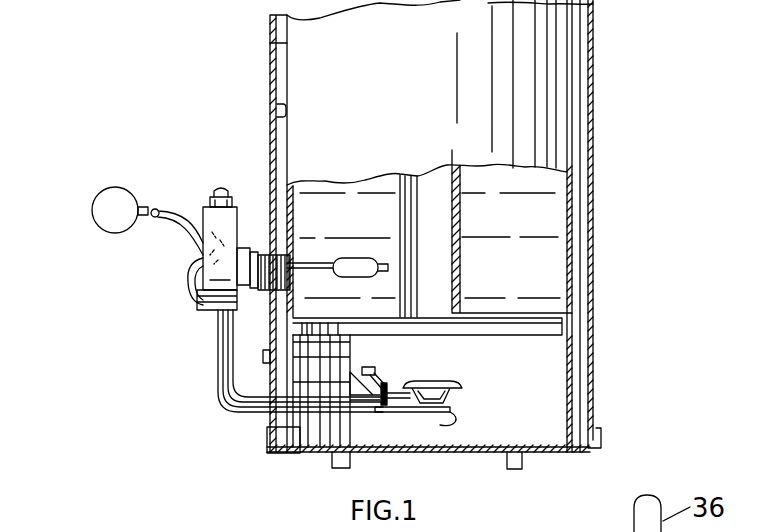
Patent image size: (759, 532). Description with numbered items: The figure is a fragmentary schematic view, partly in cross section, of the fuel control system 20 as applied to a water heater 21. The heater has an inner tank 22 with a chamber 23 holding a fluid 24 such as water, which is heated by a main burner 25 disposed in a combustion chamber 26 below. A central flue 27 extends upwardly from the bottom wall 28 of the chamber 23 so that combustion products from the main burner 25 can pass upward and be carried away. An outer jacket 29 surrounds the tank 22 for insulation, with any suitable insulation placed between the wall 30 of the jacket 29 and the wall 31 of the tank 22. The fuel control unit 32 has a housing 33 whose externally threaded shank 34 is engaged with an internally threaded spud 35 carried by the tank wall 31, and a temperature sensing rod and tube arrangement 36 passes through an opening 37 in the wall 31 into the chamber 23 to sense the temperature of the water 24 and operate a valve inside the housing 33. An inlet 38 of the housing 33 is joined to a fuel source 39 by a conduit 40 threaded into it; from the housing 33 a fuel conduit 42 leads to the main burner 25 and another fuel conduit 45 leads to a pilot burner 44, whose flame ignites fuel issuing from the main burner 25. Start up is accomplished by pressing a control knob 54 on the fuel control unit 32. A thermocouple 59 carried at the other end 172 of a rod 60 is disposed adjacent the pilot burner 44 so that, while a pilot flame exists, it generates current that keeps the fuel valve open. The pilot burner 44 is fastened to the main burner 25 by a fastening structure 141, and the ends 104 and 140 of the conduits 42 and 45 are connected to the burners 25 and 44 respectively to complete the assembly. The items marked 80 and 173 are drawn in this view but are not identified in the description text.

The fuel control system 20 is at (623, 158).
The water heater 21 is at (597, 54).
The inner tank 22 is at (574, 248).
The chamber 23 is at (548, 215).
The fluid 24 is at (548, 296).
The main burner 25 is at (465, 381).
The combustion chamber 26 is at (545, 401).
The central flue 27 is at (450, 167).
The bottom wall 28 is at (502, 307).
The outer jacket 29 is at (277, 78).
The wall of jacket 30 is at (277, 117).
The wall of tank 31 is at (287, 44).
The fuel control unit 32 is at (157, 313).
The housing 33 is at (187, 282).
The externally threaded shank 34 is at (230, 200).
The internally threaded spud 35 is at (280, 297).
The temperature sensing rod and tube arrangement 36 is at (355, 262).
The opening 37 is at (300, 265).
The inlet 38 is at (195, 265).
The fuel source 39 is at (108, 195).
The conduit 40 is at (204, 240).
The fuel conduit 42 is at (233, 413).
The pilot burner 44 is at (388, 386).
The fuel conduit 45 is at (216, 386).
The control knob 54 is at (214, 190).
The thermocouple 59 is at (370, 367).
The rod 60 is at (253, 423).
The bulb housing 80 is at (606, 530).
The end of conduit 104 is at (450, 421).
The end of conduit 140 is at (376, 405).
The fastening structure 141 is at (395, 400).
The other end of thermocouple apparatus 172 is at (362, 375).
The actuating link 173 is at (382, 377).